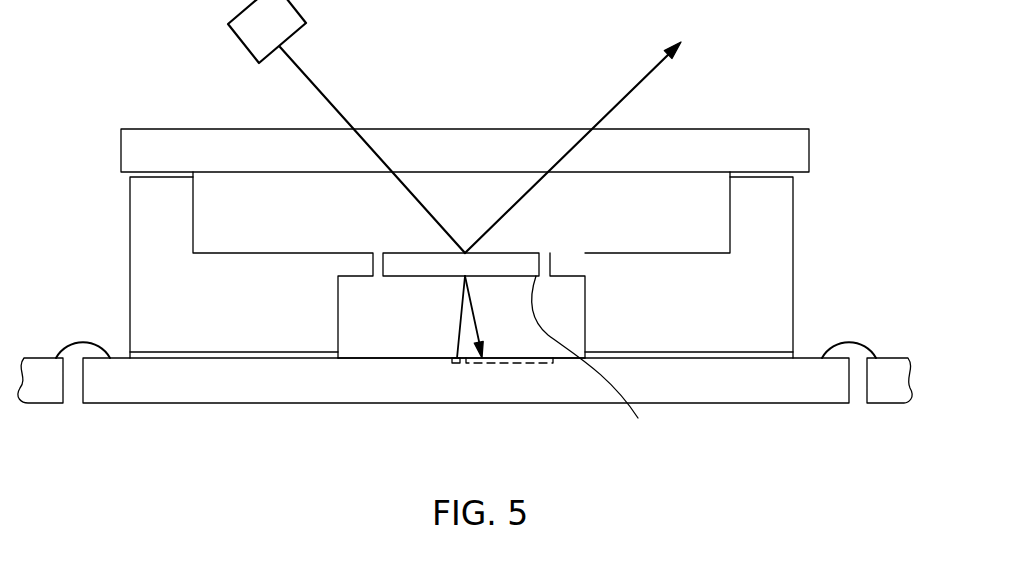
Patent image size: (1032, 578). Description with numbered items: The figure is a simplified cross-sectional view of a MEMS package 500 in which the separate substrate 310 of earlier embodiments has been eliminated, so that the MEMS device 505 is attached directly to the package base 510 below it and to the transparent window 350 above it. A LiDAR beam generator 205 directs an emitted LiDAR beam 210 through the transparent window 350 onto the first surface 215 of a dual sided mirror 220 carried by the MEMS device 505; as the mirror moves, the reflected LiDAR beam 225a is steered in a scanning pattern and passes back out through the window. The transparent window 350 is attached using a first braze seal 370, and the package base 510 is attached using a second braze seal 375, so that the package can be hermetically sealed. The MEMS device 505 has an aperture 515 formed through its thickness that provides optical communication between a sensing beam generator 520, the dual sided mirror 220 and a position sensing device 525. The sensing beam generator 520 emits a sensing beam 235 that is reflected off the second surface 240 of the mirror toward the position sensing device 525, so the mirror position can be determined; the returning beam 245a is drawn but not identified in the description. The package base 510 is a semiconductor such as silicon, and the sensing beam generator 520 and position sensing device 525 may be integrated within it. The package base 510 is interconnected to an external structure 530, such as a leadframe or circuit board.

The MEMS package 500 is at (113, 56).
The LiDAR beam generator 205 is at (228, 26).
The emitted LiDAR beam 210 is at (295, 62).
The transparent window 350 is at (506, 116).
The reflected LiDAR beam 225a is at (605, 112).
The first braze seal 370 is at (793, 172).
The substrate 310 is at (770, 212).
The MEMS device 505 is at (509, 265).
The first surface 215 is at (503, 253).
The dual sided mirror 220 is at (536, 276).
The transmitted light beam 245a is at (497, 305).
The emitted sensing beam 235 is at (458, 312).
The aperture 515 is at (587, 308).
The second braze seal 375 is at (793, 355).
The external structure 530 is at (887, 363).
The second surface 240 is at (593, 360).
The package base 510 is at (752, 380).
The sensing beam generator 520 is at (455, 364).
The position sensing device 525 is at (514, 364).